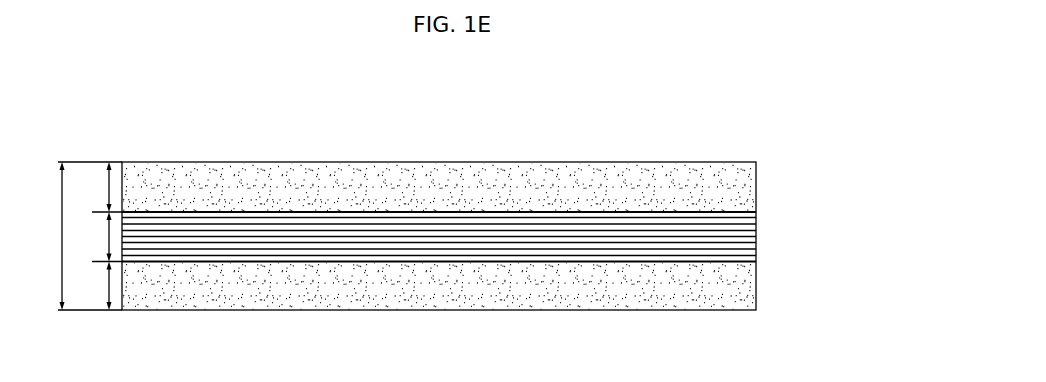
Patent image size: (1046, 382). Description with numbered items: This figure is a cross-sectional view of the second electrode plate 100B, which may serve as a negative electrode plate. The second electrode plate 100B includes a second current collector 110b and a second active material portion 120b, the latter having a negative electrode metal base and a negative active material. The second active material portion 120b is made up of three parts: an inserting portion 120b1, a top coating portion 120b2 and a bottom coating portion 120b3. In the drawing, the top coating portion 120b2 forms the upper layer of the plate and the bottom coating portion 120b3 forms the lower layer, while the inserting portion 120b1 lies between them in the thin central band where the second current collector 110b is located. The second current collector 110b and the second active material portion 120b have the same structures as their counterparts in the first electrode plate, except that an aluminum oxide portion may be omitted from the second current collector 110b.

The second electrode plate 100B is at (86, 108).
The second current collector 110b is at (340, 268).
The second active material portion 120b is at (838, 182).
The inserting portion 120b1 is at (753, 236).
The top coating portion 120b2 is at (753, 186).
The bottom coating portion 120b3 is at (753, 284).